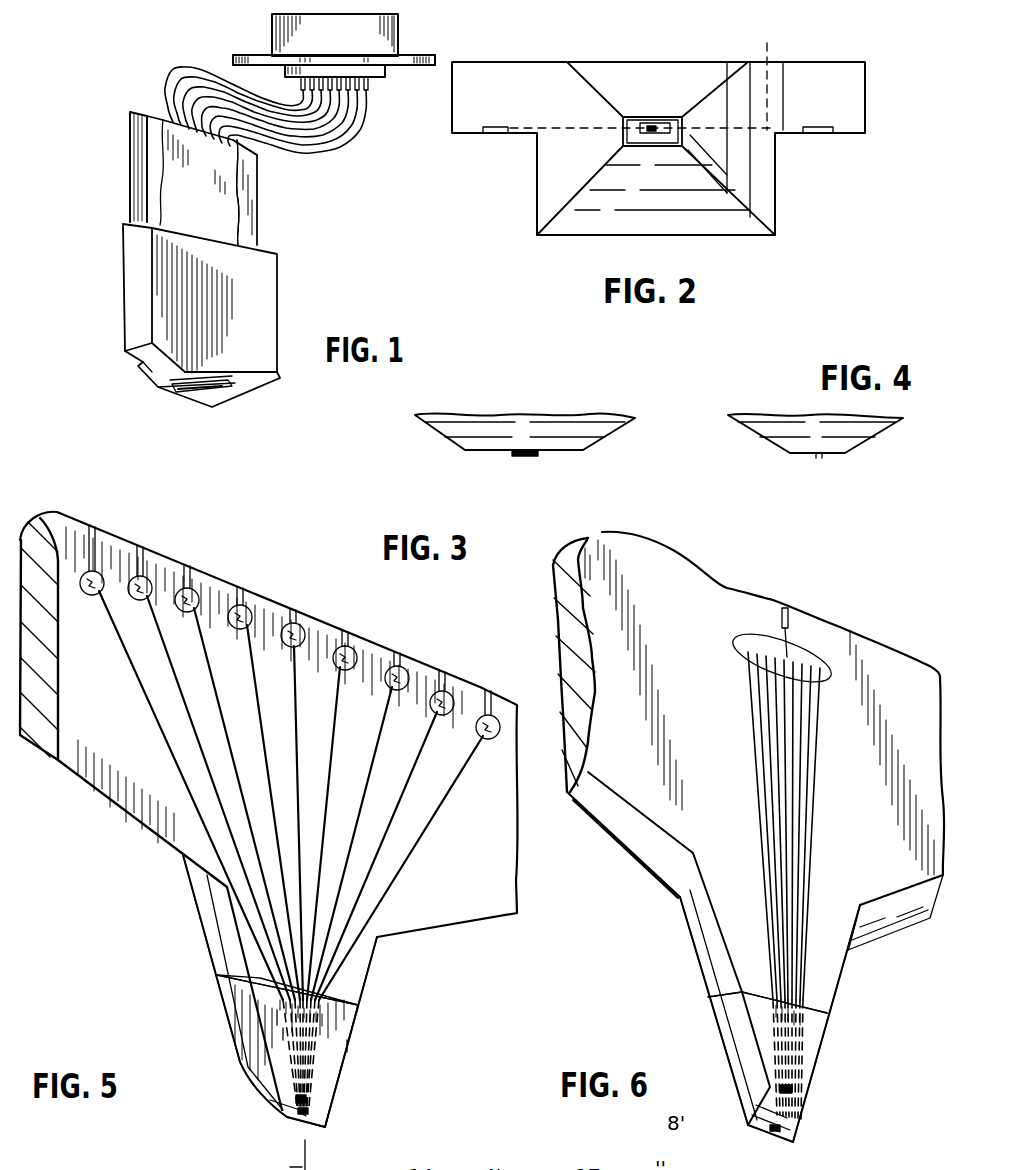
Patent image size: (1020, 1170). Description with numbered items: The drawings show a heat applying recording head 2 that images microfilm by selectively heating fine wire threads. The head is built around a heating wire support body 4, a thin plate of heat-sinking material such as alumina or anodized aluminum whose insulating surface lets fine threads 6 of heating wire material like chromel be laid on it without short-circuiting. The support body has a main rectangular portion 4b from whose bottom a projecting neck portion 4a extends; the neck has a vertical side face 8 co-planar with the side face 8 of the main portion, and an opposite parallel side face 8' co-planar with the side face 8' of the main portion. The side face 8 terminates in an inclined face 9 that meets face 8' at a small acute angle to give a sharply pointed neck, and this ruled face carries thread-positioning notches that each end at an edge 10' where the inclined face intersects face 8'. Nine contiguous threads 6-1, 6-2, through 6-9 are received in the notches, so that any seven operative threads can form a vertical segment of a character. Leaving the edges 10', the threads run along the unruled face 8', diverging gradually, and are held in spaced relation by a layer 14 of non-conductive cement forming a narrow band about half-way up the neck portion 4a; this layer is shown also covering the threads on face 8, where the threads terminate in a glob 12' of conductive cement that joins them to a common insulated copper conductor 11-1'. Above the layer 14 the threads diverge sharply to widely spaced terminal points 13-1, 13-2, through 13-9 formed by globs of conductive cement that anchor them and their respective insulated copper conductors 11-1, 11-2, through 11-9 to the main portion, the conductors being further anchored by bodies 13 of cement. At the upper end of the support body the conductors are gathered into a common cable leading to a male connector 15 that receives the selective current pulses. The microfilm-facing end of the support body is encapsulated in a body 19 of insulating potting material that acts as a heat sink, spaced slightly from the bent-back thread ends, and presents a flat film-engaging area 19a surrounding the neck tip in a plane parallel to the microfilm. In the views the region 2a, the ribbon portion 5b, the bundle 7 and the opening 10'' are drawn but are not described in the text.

In FIG. 1, the recording head 2 is at (118, 290).
In FIG. 2, the recording head 2 is at (513, 60).
In FIG. 3, the cassette housing front portion 2a is at (446, 441).
In FIG. 1, the heating wire support body 4 is at (129, 109).
In FIG. 2, the heating wire support body 4 is at (641, 75).
In FIG. 6, the heating wire support body 4 is at (867, 858).
In FIG. 1, the projecting neck portion 4a is at (147, 171).
In FIG. 5, the projecting neck portion 4a is at (216, 1001).
In FIG. 6, the projecting neck portion 4a is at (716, 1031).
In FIG. 1, the main rectangular portion 4b is at (257, 227).
In FIG. 5, the main rectangular portion 4b is at (519, 900).
In FIG. 6, the main rectangular portion 4b is at (886, 642).
In FIG. 1, the ribbon conductors 5b is at (250, 172).
In FIG. 1, the heating wire-forming threads 6 is at (187, 397).
In FIG. 2, the heating wire-forming threads 6 is at (652, 125).
In FIG. 3, the heating wire-forming threads 6 is at (520, 457).
In FIG. 4, the heating wire-forming threads 6 is at (818, 457).
In FIG. 5, the heating wire-forming threads 6 is at (276, 1073).
In FIG. 6, the heating wire-forming threads 6 is at (756, 772).
In FIG. 5, the heating wire-forming thread 6-1 is at (277, 1017).
In FIG. 5, the heating wire-forming thread 6-2 is at (283, 1033).
In FIG. 5, the heating wire-forming thread 6-9 is at (347, 1045).
In FIG. 5, the wire bundle 7 is at (317, 857).
In FIG. 5, the side face 8 is at (198, 822).
In FIG. 6, the side face 8 is at (755, 865).
In FIG. 5, the opposite side face 8' is at (229, 931).
In FIG. 5, the inclined face 9 is at (272, 1103).
In FIG. 6, the inclined face 9 is at (797, 1125).
In FIG. 5, the nozzle opening 10'' is at (279, 1140).
In FIG. 6, the edge 10' is at (741, 1149).
In FIG. 5, the insulated copper conductor 11-1 is at (128, 523).
In FIG. 5, the insulated copper conductor 11-2 is at (142, 563).
In FIG. 5, the insulated copper conductor 11-9 is at (484, 720).
In FIG. 6, the common insulated copper conductor 11-1' is at (829, 605).
In FIG. 6, the glob of conductive cement 12' is at (772, 607).
In FIG. 1, the body of cement 13 is at (223, 185).
In FIG. 5, the terminal point 13-1 is at (82, 577).
In FIG. 5, the terminal point 13-2 is at (151, 578).
In FIG. 5, the terminal point 13-9 is at (498, 734).
In FIG. 5, the layer of non-conductive cement 14 is at (333, 1072).
In FIG. 6, the layer of non-conductive cement 14 is at (813, 1013).
In FIG. 1, the male connector 15 is at (399, 34).
In FIG. 1, the encapsulating body of insulating potting material 19 is at (282, 270).
In FIG. 2, the encapsulating body of insulating potting material 19 is at (867, 92).
In FIG. 1, the flat film-engaging area 19a is at (184, 401).
In FIG. 2, the flat film-engaging area 19a is at (665, 118).
In FIG. 3, the flat film-engaging area 19a is at (568, 455).
In FIG. 4, the flat film-engaging area 19a is at (833, 455).